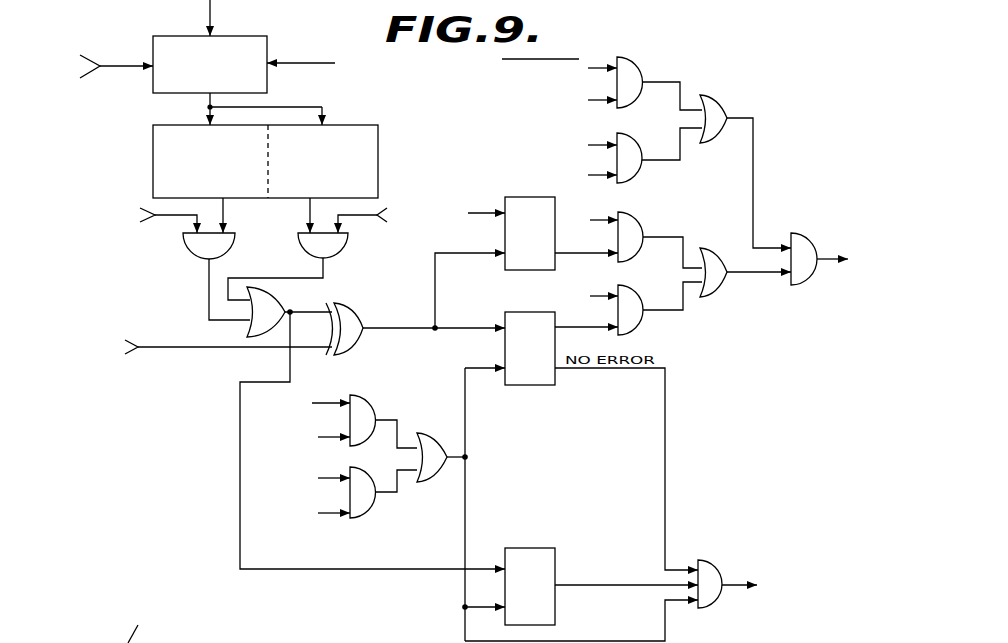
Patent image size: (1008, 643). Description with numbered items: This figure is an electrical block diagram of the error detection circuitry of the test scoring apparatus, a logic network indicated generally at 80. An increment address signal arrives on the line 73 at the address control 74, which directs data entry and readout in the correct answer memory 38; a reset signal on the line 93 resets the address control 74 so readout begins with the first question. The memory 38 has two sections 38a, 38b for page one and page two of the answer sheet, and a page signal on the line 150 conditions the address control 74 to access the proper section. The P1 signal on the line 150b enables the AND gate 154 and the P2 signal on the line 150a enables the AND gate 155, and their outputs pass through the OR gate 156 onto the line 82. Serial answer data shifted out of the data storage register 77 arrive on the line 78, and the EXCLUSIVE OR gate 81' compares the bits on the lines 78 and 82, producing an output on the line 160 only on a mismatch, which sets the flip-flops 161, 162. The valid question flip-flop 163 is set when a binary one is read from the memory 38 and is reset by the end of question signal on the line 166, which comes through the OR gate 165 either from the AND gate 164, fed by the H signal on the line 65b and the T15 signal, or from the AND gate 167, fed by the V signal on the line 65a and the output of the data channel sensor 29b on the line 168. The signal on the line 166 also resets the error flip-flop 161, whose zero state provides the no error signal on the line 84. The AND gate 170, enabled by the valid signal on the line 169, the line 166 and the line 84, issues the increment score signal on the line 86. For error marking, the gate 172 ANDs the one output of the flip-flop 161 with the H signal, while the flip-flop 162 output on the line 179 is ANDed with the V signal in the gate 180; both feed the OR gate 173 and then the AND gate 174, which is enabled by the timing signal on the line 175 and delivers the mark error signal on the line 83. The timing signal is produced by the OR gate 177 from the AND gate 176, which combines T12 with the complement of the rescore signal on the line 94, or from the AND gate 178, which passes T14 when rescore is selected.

The correct answer memory 38 is at (235, 144).
The memory section 38a is at (138, 167).
The memory section 38b is at (379, 176).
The line 73 is at (207, 26).
The address control 74 is at (267, 37).
The data storage register 77 is at (77, 364).
The line 78 is at (179, 354).
The scoring logic 80 is at (742, 398).
The EXCLUSIVE OR gate 81' is at (366, 333).
The line 82 is at (258, 332).
The mark error line 83 is at (815, 276).
The line 84 is at (665, 470).
The line 86 is at (720, 600).
The line 93 is at (306, 70).
The line 94 is at (596, 144).
The line 150 is at (130, 62).
The line 150a is at (356, 216).
The line 150b is at (168, 216).
The AND gate 154 is at (192, 260).
The AND gate 155 is at (343, 259).
The OR gate 156 is at (268, 292).
The line 160 is at (414, 326).
The error indicating flip-flop 161 is at (504, 352).
The flip-flop 162 is at (504, 242).
The valid question indicating flip-flop 163 is at (527, 548).
The AND gate 164 is at (363, 519).
The OR gate 165 is at (440, 480).
The line 166 is at (465, 492).
The AND gate 167 is at (377, 405).
The line 168 is at (325, 401).
The line 169 is at (638, 587).
The AND gate 170 is at (714, 563).
The gate 172 is at (643, 329).
The OR gate 173 is at (714, 296).
The AND gate 174 is at (812, 240).
The line 175 is at (753, 178).
The AND gate 176 is at (642, 66).
The OR gate 177 is at (722, 105).
The AND gate 178 is at (640, 176).
The line 179 is at (562, 262).
The gate 180 is at (643, 222).
The line 65a is at (600, 220).
The line 65b is at (590, 298).
The data channel sensor 29b is at (277, 405).